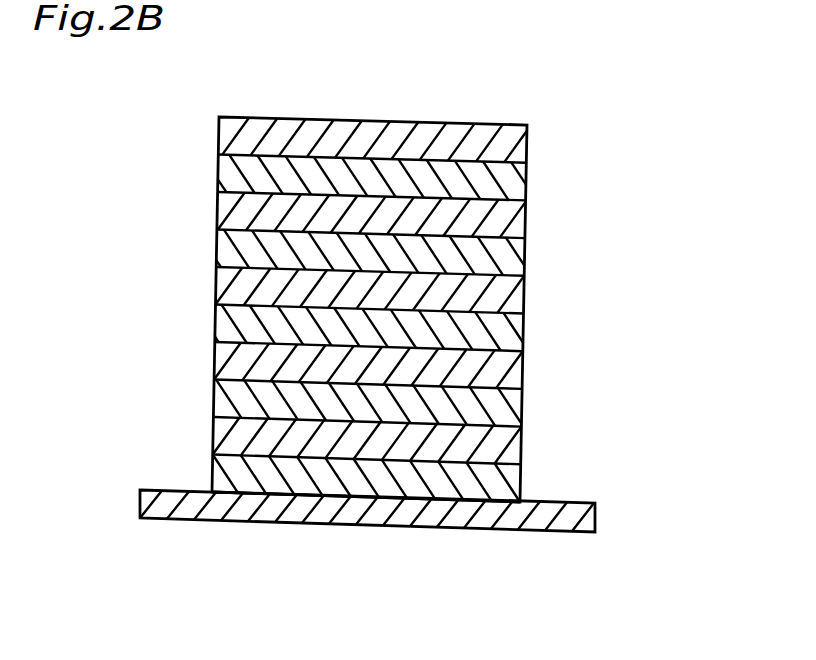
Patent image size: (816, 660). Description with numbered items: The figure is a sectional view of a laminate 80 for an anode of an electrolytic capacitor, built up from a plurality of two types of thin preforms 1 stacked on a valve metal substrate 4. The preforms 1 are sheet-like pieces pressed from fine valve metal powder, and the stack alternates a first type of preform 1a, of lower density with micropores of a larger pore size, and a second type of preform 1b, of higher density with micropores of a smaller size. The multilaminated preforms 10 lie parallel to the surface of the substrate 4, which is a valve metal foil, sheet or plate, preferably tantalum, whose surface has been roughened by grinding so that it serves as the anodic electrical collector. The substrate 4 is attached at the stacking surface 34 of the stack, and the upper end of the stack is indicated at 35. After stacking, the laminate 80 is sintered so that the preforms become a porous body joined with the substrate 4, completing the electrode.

The laminate 80 is at (410, 325).
The preforms 1 is at (410, 270).
The first type of preform 1a is at (518, 293).
The second type of preform 1b is at (218, 308).
The multilaminated preforms 10 is at (392, 185).
The top end face of the laminate 35 is at (283, 110).
The stacking surface 34 is at (263, 494).
The valve metal substrate 4 is at (567, 520).